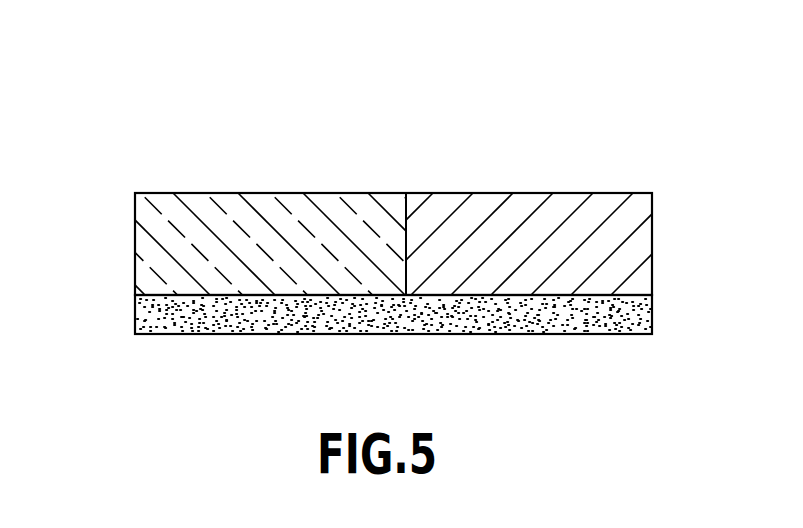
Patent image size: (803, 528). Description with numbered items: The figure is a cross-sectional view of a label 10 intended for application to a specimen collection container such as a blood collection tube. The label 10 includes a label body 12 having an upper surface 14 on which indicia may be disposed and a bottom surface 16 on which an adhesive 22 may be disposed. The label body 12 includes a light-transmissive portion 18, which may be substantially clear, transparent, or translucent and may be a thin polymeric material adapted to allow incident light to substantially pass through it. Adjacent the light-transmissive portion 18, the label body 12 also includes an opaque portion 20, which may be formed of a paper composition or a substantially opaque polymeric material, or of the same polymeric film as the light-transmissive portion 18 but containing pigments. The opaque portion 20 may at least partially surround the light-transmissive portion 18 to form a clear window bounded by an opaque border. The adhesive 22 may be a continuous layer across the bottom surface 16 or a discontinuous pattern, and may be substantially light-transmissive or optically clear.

The label 10 is at (78, 122).
The label body 12 is at (320, 192).
The upper surface 14 is at (255, 193).
The bottom surface 16 is at (473, 297).
The light-transmissive portion 18 is at (167, 228).
The opaque portion 20 is at (630, 218).
The adhesive 22 is at (170, 318).